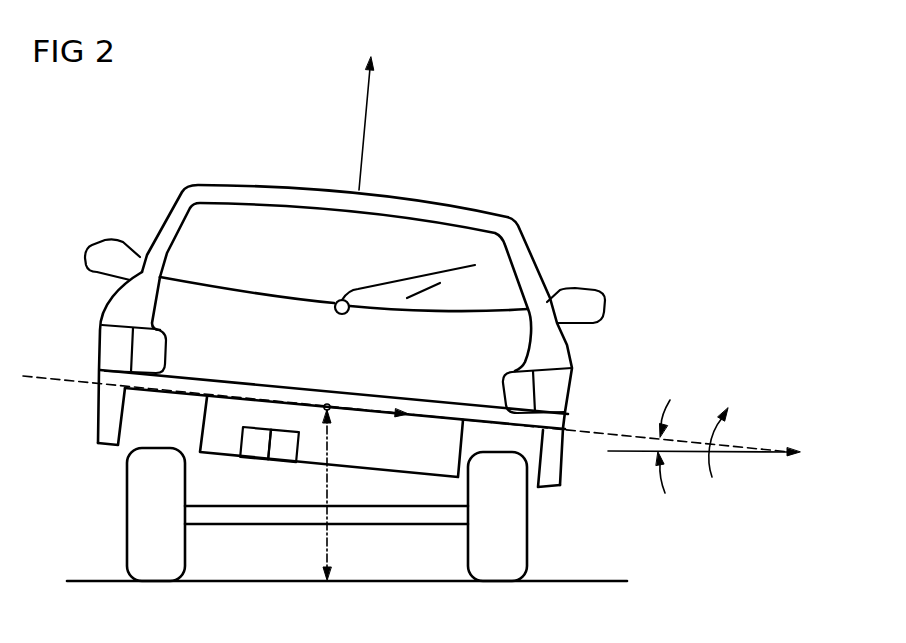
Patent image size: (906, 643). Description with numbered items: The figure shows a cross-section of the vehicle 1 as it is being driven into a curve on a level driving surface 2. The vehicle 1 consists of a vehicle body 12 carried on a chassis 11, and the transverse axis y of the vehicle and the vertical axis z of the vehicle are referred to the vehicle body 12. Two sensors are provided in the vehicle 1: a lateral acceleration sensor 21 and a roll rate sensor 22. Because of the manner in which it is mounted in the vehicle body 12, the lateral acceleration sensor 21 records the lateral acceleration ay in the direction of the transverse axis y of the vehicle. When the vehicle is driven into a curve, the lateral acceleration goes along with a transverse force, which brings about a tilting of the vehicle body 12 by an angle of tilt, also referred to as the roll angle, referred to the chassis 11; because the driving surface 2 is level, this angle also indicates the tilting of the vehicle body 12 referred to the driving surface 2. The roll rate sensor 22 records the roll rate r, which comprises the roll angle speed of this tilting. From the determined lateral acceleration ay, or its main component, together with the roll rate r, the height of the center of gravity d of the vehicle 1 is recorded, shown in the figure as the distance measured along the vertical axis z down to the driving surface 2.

The vehicle 1 is at (476, 136).
The driving surface 2 is at (566, 581).
The chassis 11 is at (135, 502).
The vehicle body 12 is at (100, 422).
The lateral acceleration sensor 21 is at (257, 431).
The roll rate sensor 22 is at (288, 431).
The height of the center of gravity d is at (333, 457).
The lateral acceleration ay is at (342, 406).
The roll rate r is at (725, 430).
The transverse axis y is at (704, 465).
The vertical axis z is at (363, 118).